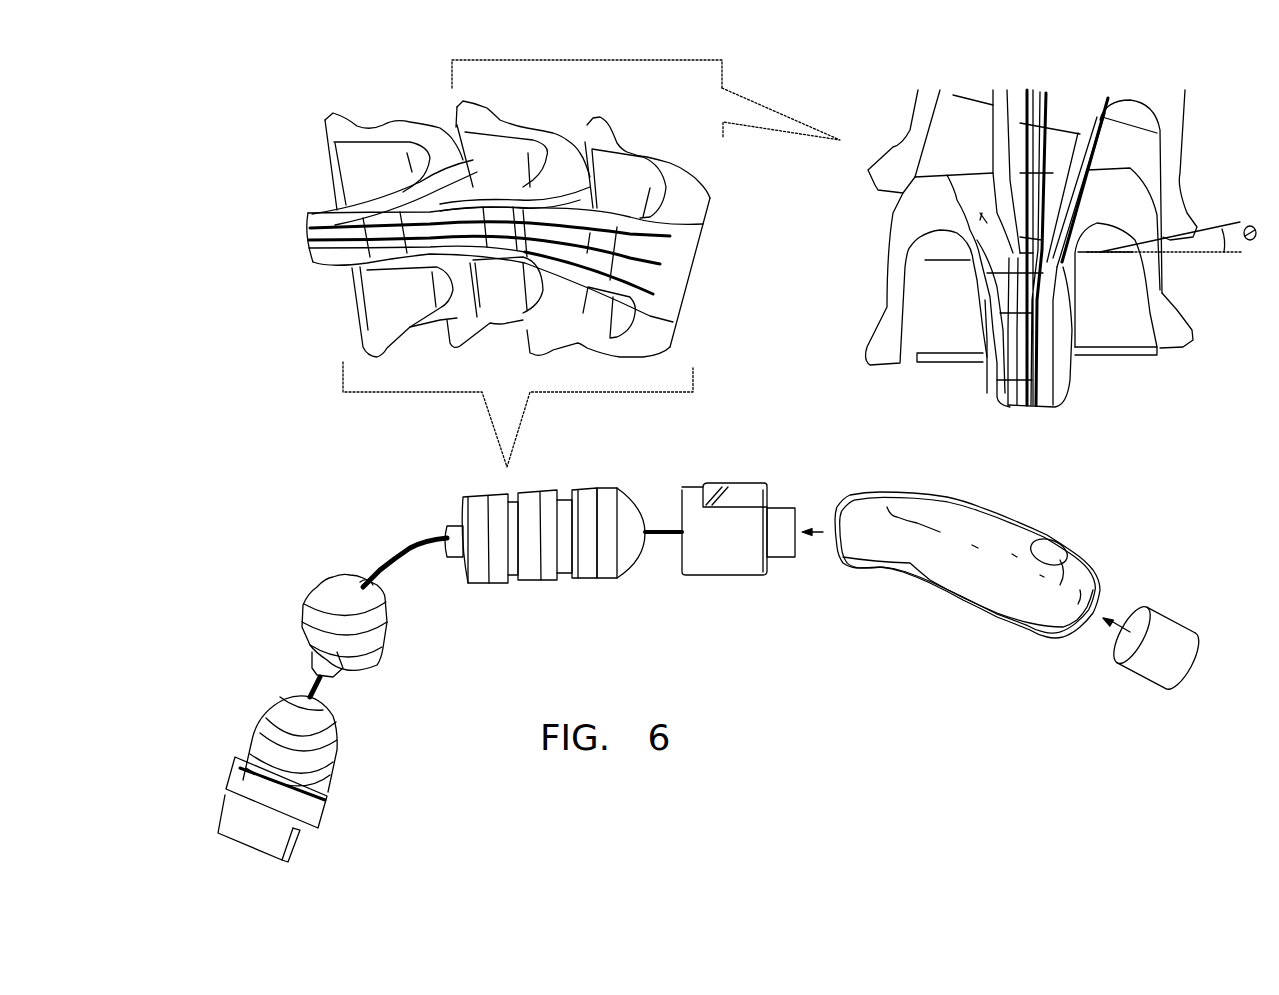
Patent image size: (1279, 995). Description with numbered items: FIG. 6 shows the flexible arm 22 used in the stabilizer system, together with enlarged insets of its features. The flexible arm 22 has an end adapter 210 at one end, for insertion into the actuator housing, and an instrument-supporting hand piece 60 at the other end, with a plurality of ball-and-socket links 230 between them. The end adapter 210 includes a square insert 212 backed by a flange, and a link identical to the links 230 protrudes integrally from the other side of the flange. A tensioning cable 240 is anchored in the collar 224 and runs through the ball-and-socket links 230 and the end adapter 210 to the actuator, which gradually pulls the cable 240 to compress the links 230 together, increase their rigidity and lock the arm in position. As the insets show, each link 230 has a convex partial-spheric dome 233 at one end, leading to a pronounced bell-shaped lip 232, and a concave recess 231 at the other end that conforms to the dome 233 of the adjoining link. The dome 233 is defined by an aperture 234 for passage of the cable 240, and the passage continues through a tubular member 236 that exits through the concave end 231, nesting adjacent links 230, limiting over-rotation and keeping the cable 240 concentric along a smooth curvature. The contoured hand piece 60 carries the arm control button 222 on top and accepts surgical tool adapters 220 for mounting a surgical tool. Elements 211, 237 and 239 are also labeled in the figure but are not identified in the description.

The flexible arm 22 is at (204, 497).
The hand piece 60 is at (953, 497).
The end adapter 210 is at (226, 687).
The collar 211 is at (230, 777).
The square insert 212 is at (222, 812).
The surgical tool adapter 220 is at (1135, 675).
The arm control button 222 is at (1050, 537).
The connector collar 224 is at (790, 506).
The ball-and-socket link 230 is at (231, 209).
The concave partial-spheric face 231 is at (352, 155).
The bell-shaped lip 232 is at (615, 125).
The convex partial-spheric face 233 is at (693, 182).
The aperture 234 is at (673, 300).
The tubular member 236 is at (355, 262).
The electrodes 237 is at (643, 283).
The lead wires 239 is at (1046, 120).
The tensioning cable 240 is at (317, 687).